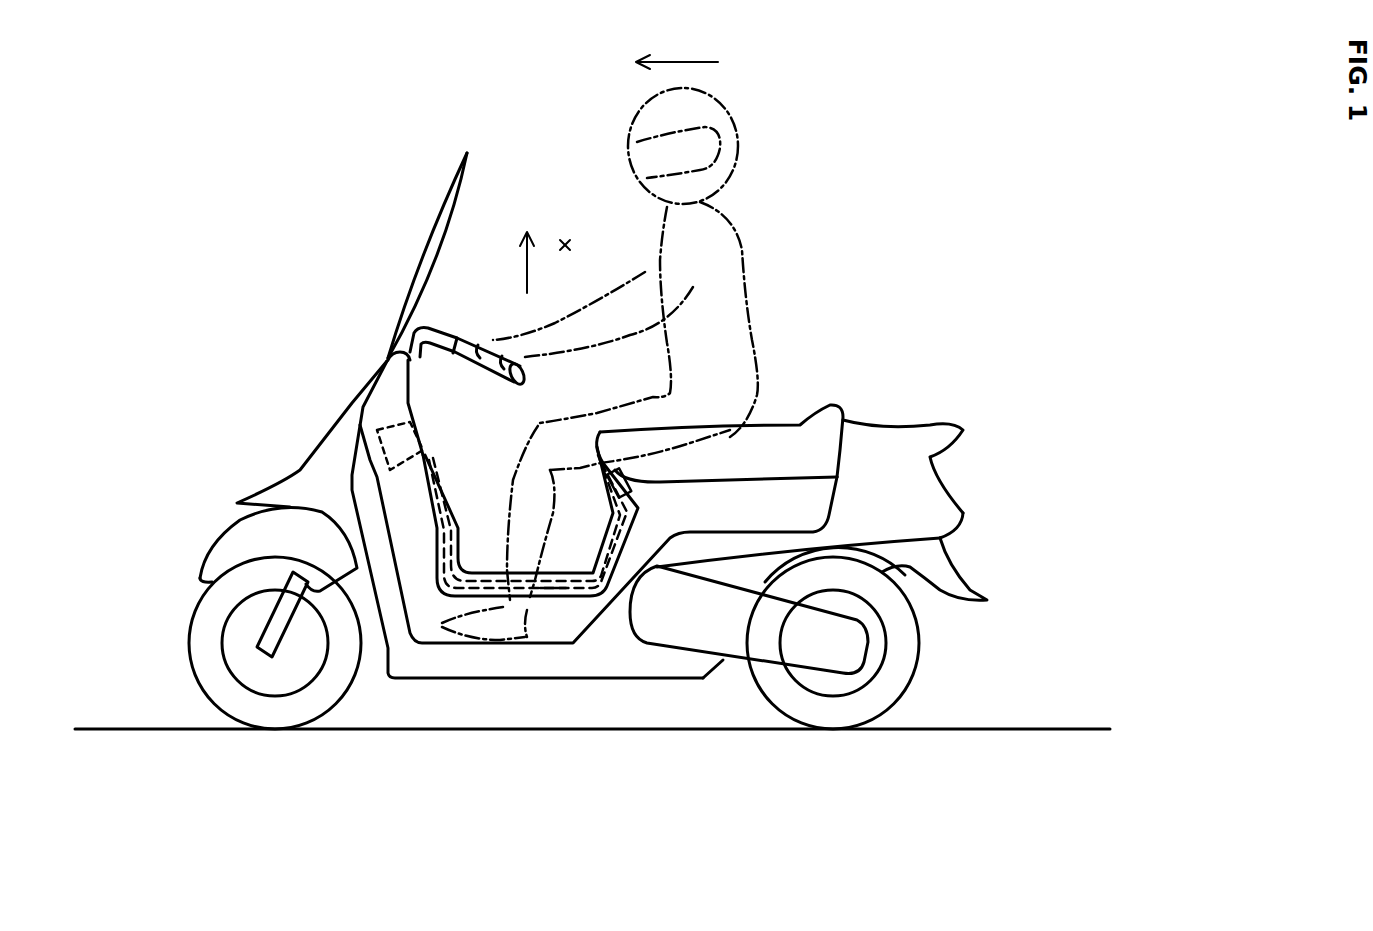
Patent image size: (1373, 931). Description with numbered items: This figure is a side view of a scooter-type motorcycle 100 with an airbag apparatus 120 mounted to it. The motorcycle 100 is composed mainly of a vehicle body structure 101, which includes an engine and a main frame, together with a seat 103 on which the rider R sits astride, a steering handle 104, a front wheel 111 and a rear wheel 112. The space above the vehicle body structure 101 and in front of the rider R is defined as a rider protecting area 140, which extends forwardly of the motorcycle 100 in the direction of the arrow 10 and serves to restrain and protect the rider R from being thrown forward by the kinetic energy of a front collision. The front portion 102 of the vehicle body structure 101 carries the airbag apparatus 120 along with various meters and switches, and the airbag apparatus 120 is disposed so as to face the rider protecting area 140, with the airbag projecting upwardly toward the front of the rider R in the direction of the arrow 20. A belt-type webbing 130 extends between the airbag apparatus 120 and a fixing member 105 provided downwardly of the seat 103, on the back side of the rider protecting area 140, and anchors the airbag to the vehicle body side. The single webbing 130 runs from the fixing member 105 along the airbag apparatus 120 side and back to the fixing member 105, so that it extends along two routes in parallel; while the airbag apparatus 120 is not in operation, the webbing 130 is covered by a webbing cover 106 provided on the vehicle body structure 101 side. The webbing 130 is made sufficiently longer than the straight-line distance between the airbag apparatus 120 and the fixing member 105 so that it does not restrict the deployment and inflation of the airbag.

The arrow indicating forward direction 10 is at (677, 43).
The arrow indicating projecting direction 20 is at (510, 262).
The motorcycle 100 is at (880, 315).
The vehicle body structure 101 is at (489, 685).
The front portion 102 is at (362, 382).
The seat 103 is at (775, 438).
The steering handle 104 is at (434, 324).
The fixing member 105 is at (597, 600).
The webbing cover 106 is at (480, 570).
The front wheel 111 is at (267, 710).
The rear wheel 112 is at (808, 712).
The airbag apparatus 120 is at (380, 431).
The webbing 130 is at (553, 597).
The rider protecting area 140 is at (562, 242).
The rider R is at (723, 267).